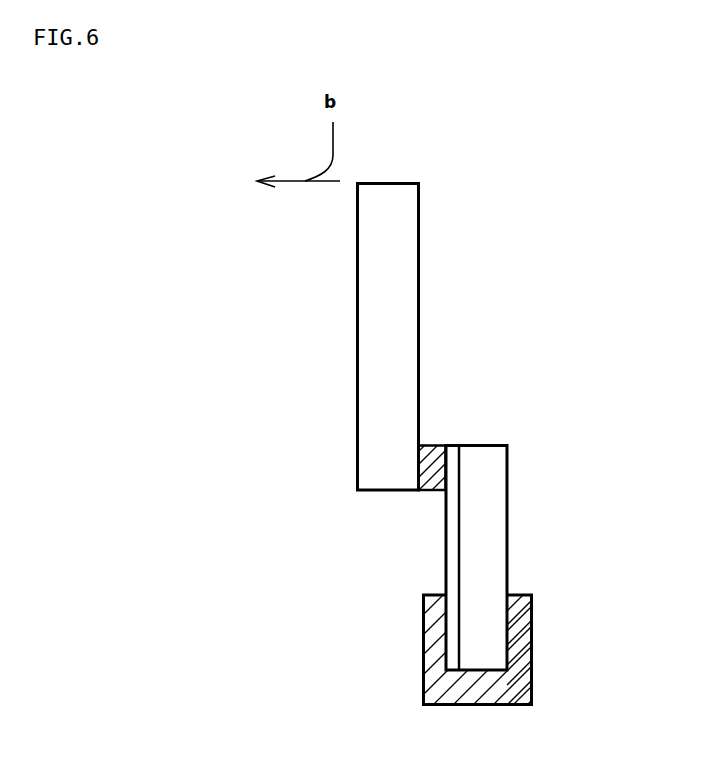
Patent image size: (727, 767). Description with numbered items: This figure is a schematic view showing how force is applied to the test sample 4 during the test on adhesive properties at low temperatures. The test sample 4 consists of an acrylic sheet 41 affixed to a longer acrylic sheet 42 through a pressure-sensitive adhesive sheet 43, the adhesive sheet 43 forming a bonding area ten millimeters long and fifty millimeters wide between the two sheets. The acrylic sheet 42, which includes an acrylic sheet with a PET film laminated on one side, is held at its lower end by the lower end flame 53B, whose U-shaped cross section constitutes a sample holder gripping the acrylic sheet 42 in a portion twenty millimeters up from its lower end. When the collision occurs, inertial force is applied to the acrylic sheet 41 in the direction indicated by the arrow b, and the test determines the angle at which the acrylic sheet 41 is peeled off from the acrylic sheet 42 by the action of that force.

The test sample 4 is at (518, 223).
The acrylic sheet 41 is at (410, 258).
The acrylic sheet 42 is at (507, 513).
The pressure-sensitive adhesive sheet 43 is at (428, 447).
The lower end flame 53B is at (517, 652).